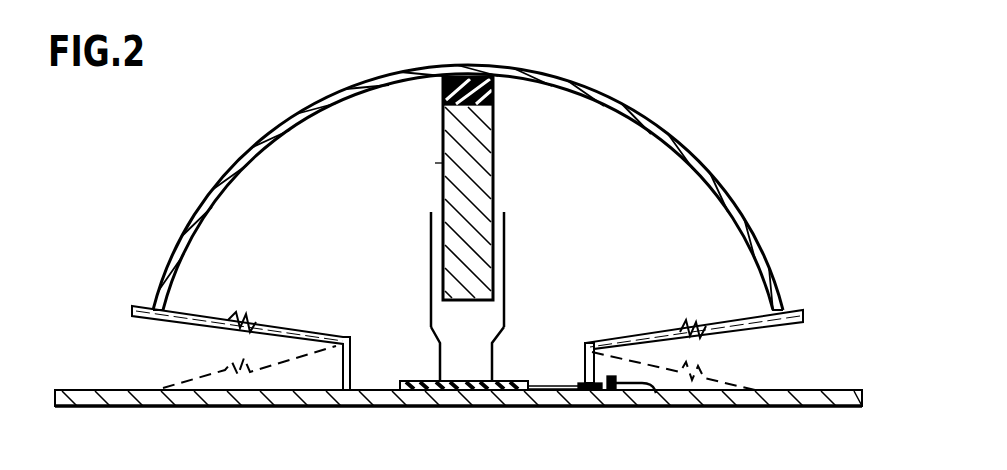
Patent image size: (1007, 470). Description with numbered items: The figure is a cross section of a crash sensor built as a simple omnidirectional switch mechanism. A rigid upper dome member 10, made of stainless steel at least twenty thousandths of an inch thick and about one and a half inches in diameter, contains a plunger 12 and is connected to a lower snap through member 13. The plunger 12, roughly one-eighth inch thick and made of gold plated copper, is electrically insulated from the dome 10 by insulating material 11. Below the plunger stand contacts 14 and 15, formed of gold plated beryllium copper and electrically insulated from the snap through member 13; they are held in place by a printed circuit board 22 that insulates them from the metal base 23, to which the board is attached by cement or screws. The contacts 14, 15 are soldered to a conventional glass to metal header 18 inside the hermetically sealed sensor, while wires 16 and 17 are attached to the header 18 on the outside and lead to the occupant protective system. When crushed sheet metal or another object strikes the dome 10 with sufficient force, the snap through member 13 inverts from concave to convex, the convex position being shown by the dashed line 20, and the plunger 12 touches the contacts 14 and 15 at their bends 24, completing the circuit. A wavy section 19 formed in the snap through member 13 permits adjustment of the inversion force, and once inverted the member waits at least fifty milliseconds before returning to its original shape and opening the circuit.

The rigid upper dome member 10 is at (652, 121).
The insulating material 11 is at (493, 94).
The plunger 12 is at (493, 160).
The snap through member 13 is at (200, 326).
The contact 14 is at (506, 254).
The contact 15 is at (431, 246).
The wire 16 is at (648, 392).
The wire 17 is at (638, 396).
The glass to metal header 18 is at (578, 374).
The wavy section 19 is at (242, 320).
The dashed line 20 is at (208, 372).
The printed circuit board 22 is at (480, 380).
The metal base 23 is at (386, 408).
The bends 24 is at (438, 333).